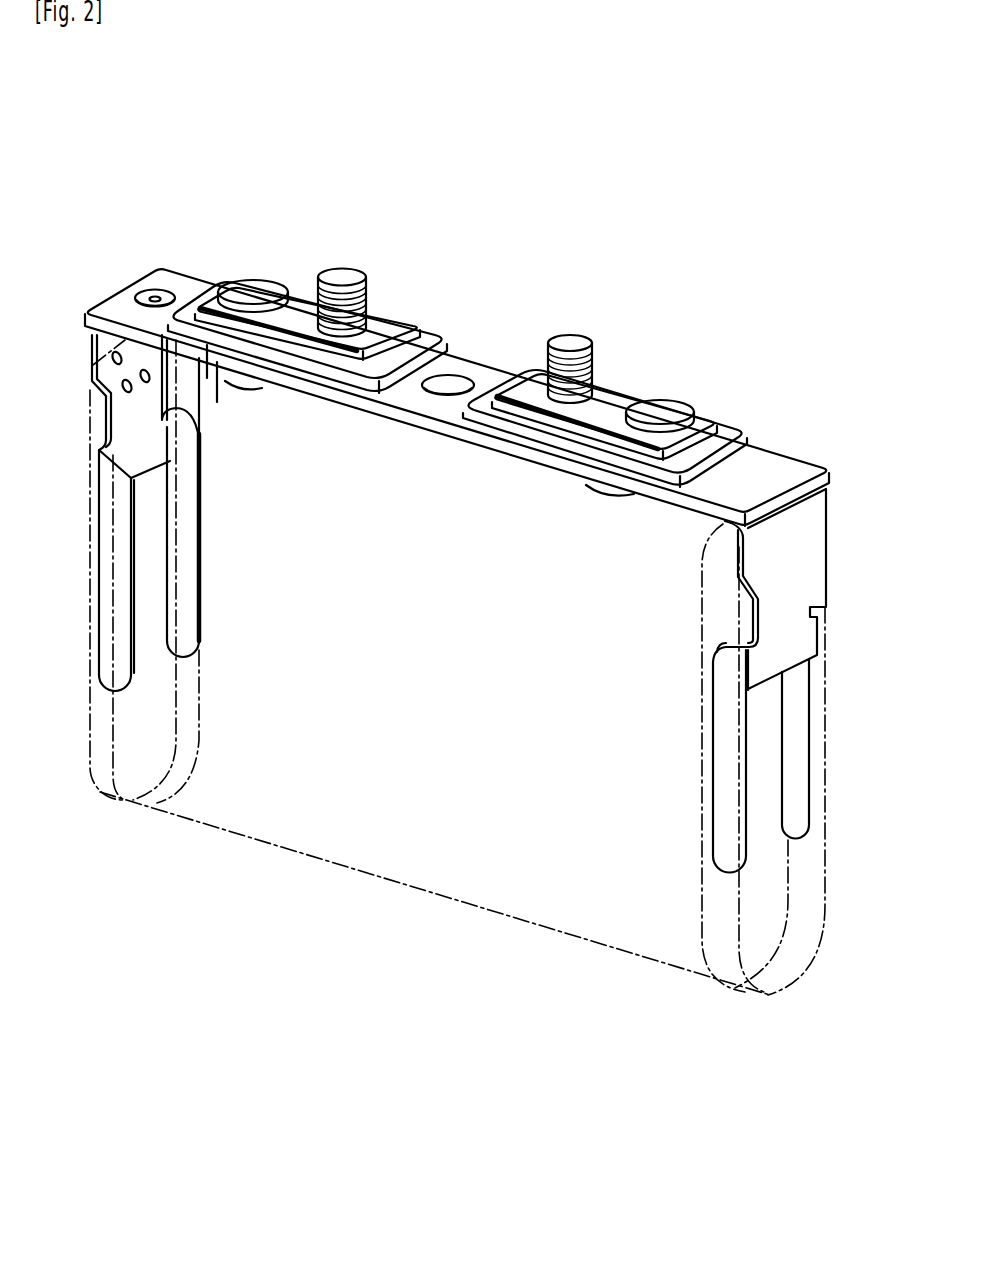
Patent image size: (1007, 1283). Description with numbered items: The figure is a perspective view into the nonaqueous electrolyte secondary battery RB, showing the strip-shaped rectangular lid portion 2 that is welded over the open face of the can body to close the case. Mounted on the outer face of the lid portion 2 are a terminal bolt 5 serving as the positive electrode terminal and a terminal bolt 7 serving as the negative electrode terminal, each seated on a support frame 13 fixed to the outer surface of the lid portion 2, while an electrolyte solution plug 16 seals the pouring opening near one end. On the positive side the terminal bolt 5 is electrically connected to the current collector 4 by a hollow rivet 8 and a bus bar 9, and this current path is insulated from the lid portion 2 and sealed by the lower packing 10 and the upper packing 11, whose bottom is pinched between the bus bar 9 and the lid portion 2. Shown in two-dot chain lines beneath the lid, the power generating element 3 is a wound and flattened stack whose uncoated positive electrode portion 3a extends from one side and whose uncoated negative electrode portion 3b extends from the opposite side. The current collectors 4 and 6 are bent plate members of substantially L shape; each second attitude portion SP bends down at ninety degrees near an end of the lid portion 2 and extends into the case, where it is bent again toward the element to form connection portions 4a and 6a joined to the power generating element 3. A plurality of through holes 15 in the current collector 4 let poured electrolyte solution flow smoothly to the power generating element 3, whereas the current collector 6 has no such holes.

The lid portion 2 is at (438, 428).
The power generating element 3 is at (355, 872).
The portion of the foil-shaped positive electrode plate not applied with the active 3a is at (108, 782).
The portion of the foil-shaped negative electrode plate not applied with the active 3b is at (714, 932).
The current collector 4 is at (178, 513).
The connection portion 4a is at (187, 628).
The terminal bolt 5 is at (352, 270).
The current collector 6 is at (736, 681).
The connection portion 6a is at (720, 763).
The terminal bolt 7 is at (570, 343).
The hollow rivet 8 is at (253, 290).
The bus bar 9 is at (305, 302).
The lower packing 10 is at (268, 410).
The upper packing 11 is at (352, 352).
The support frame 13 is at (440, 338).
The through holes 15 is at (147, 353).
The electrolyte solution plug 16 is at (148, 298).
The nonaqueous electrolyte secondary battery RB is at (488, 230).
The second attitude portion SP is at (147, 457).